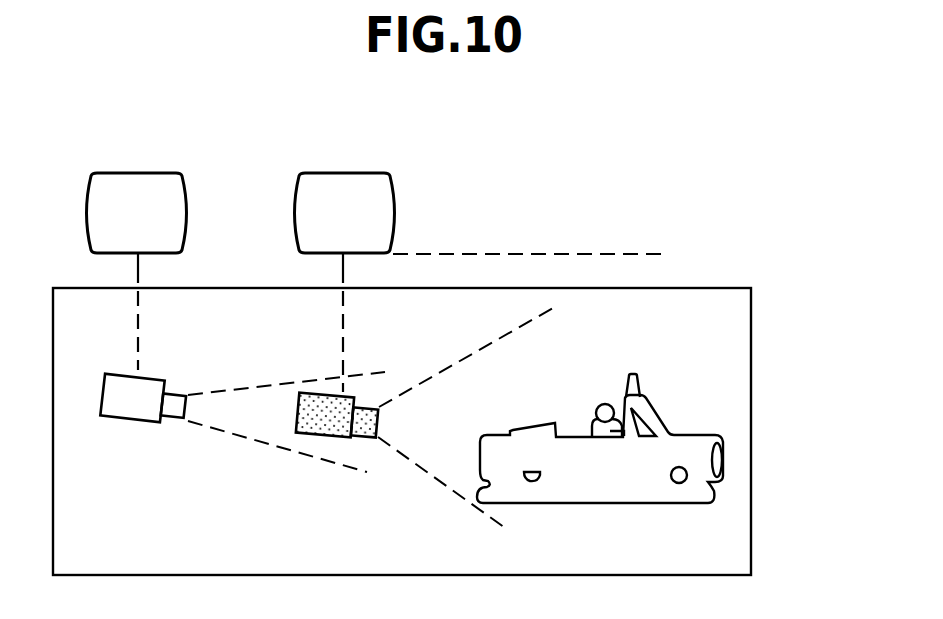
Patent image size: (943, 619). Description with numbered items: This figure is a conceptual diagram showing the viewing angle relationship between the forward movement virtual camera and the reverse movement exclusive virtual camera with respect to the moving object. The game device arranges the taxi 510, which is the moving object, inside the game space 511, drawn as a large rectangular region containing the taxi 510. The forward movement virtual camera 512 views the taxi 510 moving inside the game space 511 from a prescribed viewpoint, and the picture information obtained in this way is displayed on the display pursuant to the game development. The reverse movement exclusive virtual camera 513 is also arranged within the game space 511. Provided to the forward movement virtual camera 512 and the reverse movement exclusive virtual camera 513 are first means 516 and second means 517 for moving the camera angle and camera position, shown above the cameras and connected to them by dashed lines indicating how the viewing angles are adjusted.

The taxi 510 is at (560, 415).
The game space 511 is at (733, 373).
The forward movement virtual camera 512 is at (333, 437).
The reverse movement exclusive virtual camera 513 is at (122, 422).
The first means 516 is at (365, 173).
The second means 517 is at (150, 173).